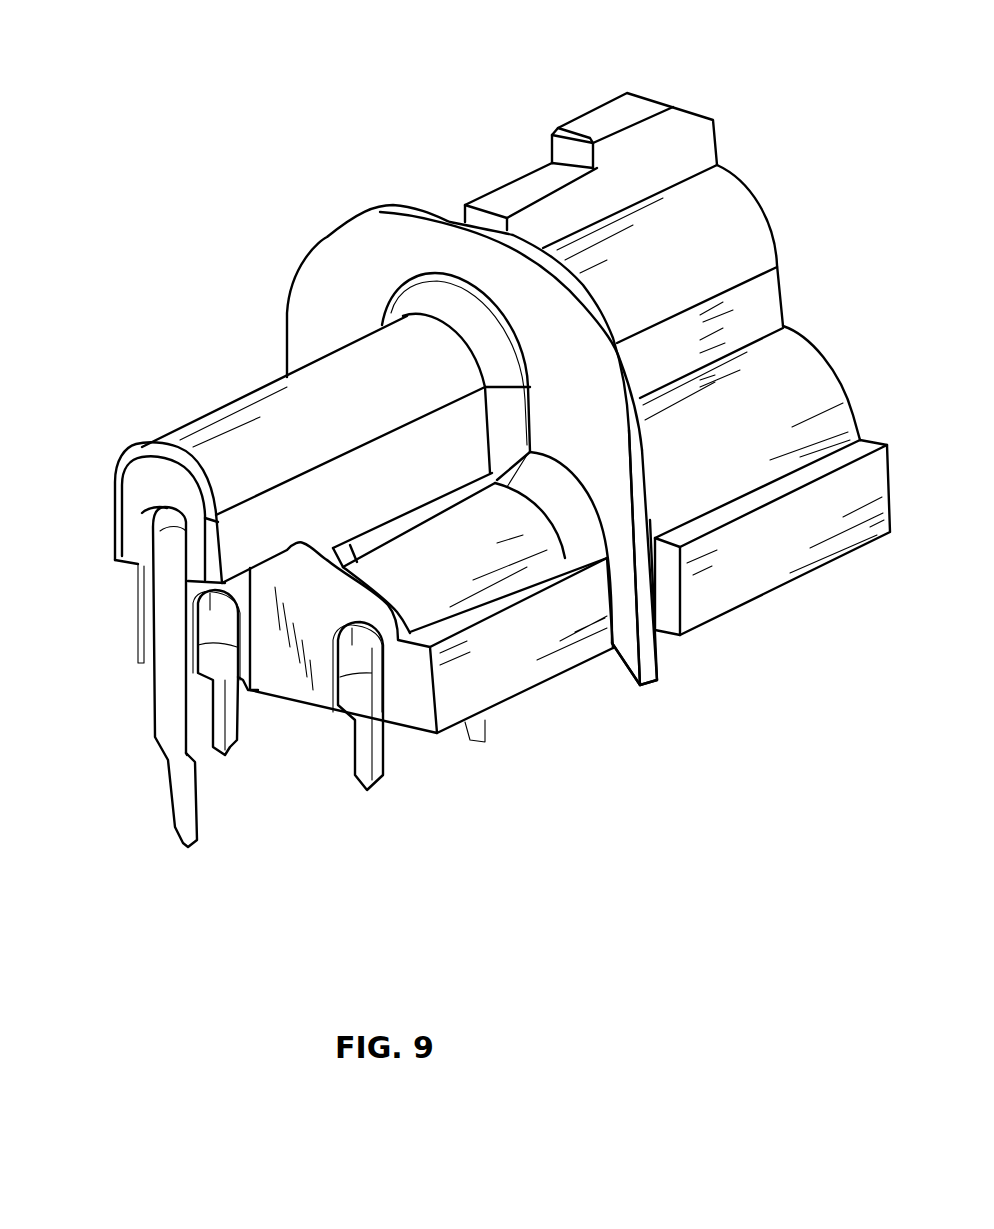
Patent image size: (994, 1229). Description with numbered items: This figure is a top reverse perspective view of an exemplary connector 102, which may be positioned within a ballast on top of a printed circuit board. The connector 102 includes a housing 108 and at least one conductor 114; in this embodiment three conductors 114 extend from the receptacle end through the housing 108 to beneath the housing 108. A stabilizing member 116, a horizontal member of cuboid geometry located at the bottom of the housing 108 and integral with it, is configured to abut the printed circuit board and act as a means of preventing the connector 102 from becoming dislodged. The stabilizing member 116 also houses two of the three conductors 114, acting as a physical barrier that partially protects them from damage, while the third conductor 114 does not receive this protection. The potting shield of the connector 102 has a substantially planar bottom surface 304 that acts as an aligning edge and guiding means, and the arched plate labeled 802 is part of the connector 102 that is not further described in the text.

The connector 102 is at (158, 52).
The housing 108 is at (200, 425).
The conductor 114 is at (162, 723).
The stabilizing member 116 is at (493, 690).
The substantially planar bottom surface 304 is at (623, 648).
The arched plate 802 is at (433, 216).